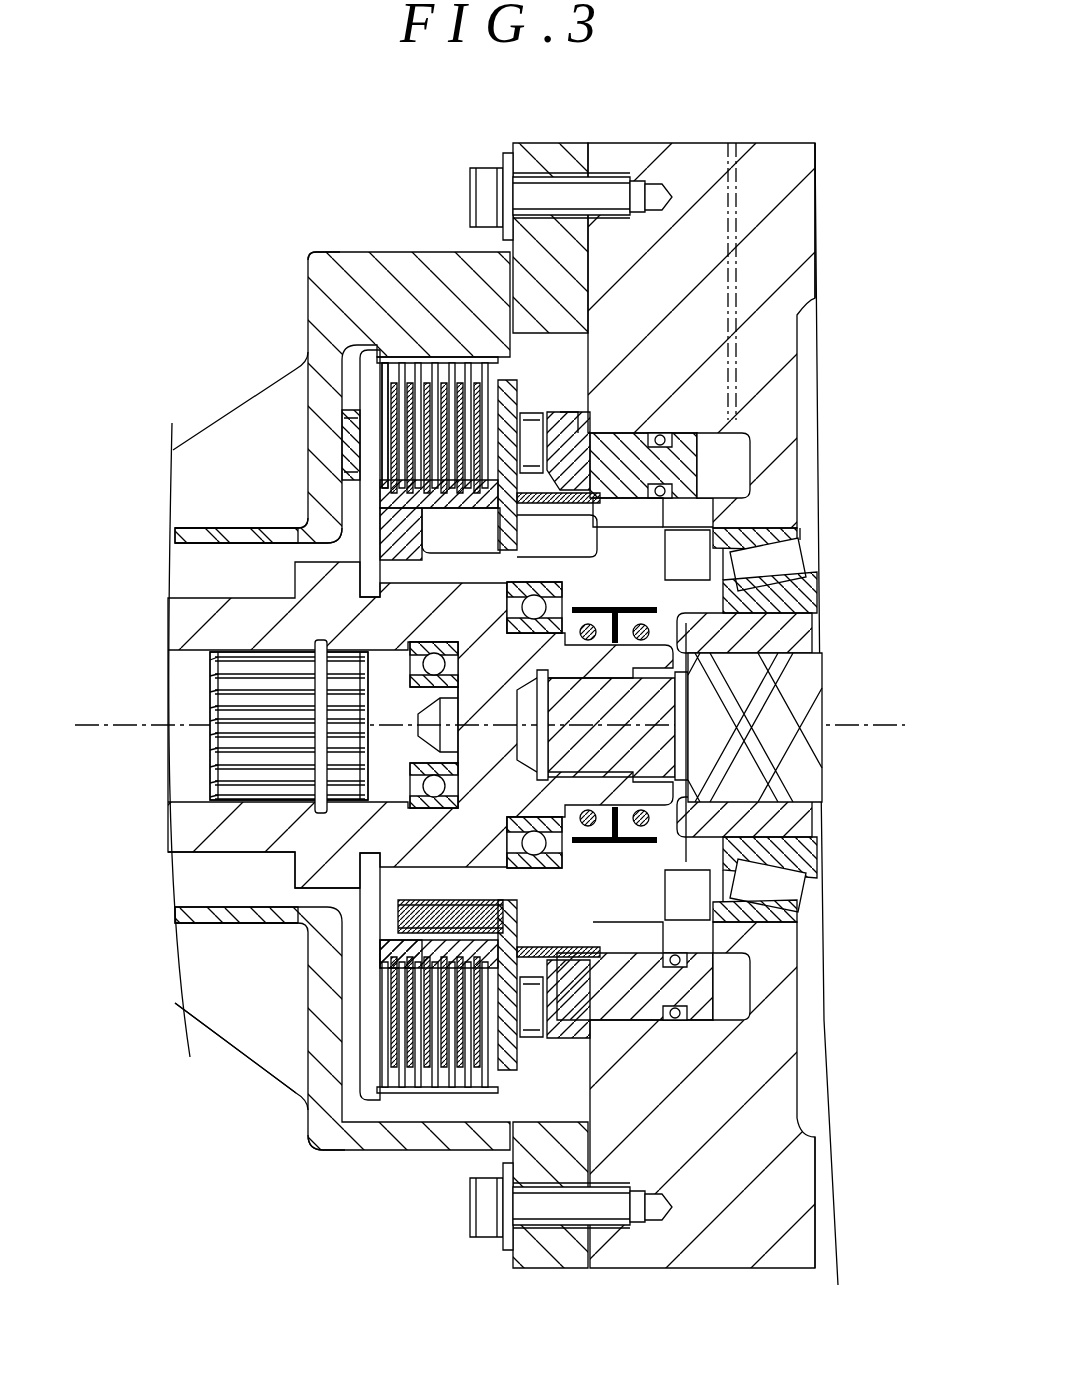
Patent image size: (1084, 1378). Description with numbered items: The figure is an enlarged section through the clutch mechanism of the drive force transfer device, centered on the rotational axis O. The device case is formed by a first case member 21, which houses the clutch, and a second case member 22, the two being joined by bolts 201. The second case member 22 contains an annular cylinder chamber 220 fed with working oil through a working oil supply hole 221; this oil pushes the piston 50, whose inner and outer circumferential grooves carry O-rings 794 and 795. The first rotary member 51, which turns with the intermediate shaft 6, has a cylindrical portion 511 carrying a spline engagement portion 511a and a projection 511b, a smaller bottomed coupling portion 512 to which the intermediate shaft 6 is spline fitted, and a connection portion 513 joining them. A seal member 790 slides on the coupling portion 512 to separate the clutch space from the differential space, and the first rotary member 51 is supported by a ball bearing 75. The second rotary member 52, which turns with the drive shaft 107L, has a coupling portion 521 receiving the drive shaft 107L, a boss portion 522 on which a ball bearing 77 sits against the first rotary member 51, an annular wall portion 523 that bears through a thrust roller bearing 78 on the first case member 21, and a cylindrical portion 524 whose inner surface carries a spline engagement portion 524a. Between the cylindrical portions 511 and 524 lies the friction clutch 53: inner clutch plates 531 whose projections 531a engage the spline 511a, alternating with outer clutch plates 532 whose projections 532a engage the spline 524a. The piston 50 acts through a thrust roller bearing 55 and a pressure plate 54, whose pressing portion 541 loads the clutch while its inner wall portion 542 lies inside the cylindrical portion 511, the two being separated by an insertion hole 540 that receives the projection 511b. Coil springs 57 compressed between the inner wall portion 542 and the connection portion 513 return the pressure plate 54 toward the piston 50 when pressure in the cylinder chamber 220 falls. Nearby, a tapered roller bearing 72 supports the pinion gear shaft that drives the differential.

The intermediate shaft 6 is at (813, 712).
The rotational axis O is at (873, 728).
The first case member 21 is at (571, 143).
The second case member 22 is at (703, 143).
The working oil supply hole 221 is at (745, 272).
The cylinder chamber 220 is at (726, 440).
The bolts 201 is at (484, 168).
The piston 50 is at (690, 470).
The first rotary member 51 is at (310, 505).
The second rotary member 52 is at (240, 598).
The friction clutch 53 is at (407, 1100).
The pressure plate 54 is at (493, 352).
The thrust roller bearing 55 is at (530, 437).
The coil springs 57 is at (395, 916).
The tapered roller bearing 72 is at (793, 897).
The ball bearing 75 is at (506, 596).
The ball bearing 77 is at (515, 815).
The thrust roller bearing 78 is at (358, 500).
The drive shaft 107L is at (188, 752).
The cylindrical portion 511 is at (470, 942).
The spline engagement portion 511a is at (450, 952).
The projection 511b is at (525, 506).
The coupling portion 512 is at (630, 662).
The connection portion 513 is at (400, 872).
The coupling portion 521 is at (213, 624).
The boss portion 522 is at (430, 700).
The wall portion 523 is at (352, 540).
The cylindrical portion 524 is at (430, 360).
The spline engagement portion 524a is at (383, 363).
The inner clutch plates 531 is at (340, 1005).
The projections 531a is at (318, 1010).
The outer clutch plates 532 is at (343, 348).
The projections 532a is at (310, 255).
The insertion hole 540 is at (533, 947).
The pressing portion 541 is at (467, 1098).
The inner wall portion 542 is at (507, 903).
The seal member 790 is at (786, 572).
The O-ring 794 is at (672, 492).
The O-ring 795 is at (676, 437).